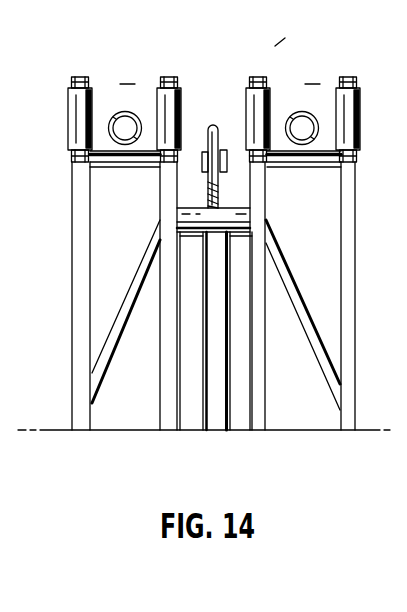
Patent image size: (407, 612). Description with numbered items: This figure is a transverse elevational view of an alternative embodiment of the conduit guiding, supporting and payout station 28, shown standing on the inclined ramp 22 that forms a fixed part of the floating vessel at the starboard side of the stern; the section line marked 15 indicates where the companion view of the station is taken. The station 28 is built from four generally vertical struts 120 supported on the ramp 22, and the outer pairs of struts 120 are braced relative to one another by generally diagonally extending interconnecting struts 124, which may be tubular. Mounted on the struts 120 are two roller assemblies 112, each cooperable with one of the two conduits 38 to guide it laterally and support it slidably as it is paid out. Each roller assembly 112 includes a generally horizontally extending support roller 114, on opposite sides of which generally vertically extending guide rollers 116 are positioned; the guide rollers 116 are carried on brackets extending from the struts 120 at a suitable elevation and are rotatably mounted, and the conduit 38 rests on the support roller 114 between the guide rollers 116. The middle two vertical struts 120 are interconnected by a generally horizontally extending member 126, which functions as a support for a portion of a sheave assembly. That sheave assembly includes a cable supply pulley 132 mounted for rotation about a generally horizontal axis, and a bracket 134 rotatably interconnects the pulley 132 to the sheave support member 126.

The ramp 22 is at (305, 430).
The conduit guiding, supporting and payout station 28 is at (275, 47).
The conduit 38 is at (126, 112).
The roller assembly 112 is at (130, 82).
The support roller 114 is at (132, 158).
The guide roller 116 is at (68, 95).
The vertical strut 120 is at (168, 197).
The interconnecting strut 124 is at (145, 256).
The horizontally extending member 126 is at (232, 218).
The cable supply pulley 132 is at (209, 136).
The bracket 134 is at (221, 176).
The section line 15- 15 is at (209, 5).